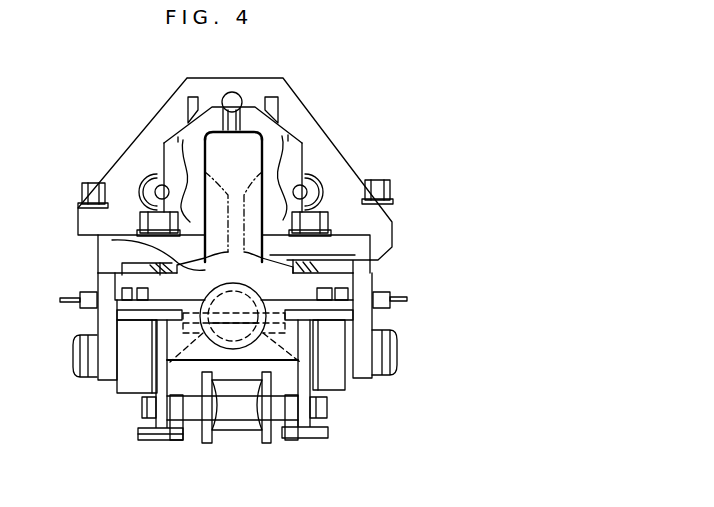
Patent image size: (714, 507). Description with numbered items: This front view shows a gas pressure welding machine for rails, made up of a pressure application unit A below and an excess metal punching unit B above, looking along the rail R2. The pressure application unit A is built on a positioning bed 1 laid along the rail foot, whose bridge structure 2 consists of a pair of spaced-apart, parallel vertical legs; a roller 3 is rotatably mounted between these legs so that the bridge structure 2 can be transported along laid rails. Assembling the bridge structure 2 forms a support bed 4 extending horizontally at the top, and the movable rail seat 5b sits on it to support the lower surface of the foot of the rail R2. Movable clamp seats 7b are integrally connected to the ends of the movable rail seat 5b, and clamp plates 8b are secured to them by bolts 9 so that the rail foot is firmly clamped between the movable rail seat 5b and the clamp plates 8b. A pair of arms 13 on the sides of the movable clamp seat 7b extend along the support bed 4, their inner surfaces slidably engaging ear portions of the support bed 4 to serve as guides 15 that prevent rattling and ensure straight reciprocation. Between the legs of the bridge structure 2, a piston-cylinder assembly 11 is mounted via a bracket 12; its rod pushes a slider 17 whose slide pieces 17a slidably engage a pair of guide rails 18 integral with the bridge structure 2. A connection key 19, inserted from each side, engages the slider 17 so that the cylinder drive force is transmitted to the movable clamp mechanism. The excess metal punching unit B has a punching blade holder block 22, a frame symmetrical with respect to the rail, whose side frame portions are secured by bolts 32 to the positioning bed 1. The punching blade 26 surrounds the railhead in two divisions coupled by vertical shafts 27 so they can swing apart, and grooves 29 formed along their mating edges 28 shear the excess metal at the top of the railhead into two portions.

The positioning bed 1 is at (138, 442).
The bridge structure 2 is at (160, 438).
The roller 3 is at (240, 432).
The support bed 4 is at (105, 326).
The movable rail seat 5b is at (118, 244).
The movable clamp seat 7b is at (138, 283).
The clamp plate 8b is at (110, 255).
The bolt 9 is at (142, 186).
The piston-cylinder assembly 11 is at (240, 335).
The bracket 12 is at (278, 292).
The arm 13 is at (86, 357).
The guide 15 is at (118, 314).
The slider 17 is at (236, 290).
The slide piece 17a is at (195, 348).
The guide rail 18 is at (160, 345).
The connection key 19 is at (62, 300).
The punching blade holder block 22 is at (305, 152).
The punching blade 26 is at (278, 128).
The vertical shaft 27 is at (193, 106).
The mating edge 28 is at (233, 96).
The groove 29 is at (224, 112).
The bolt 32 is at (90, 183).
The rail R2 is at (235, 222).
The pressure application unit A is at (409, 409).
The excess metal punching unit B is at (356, 86).